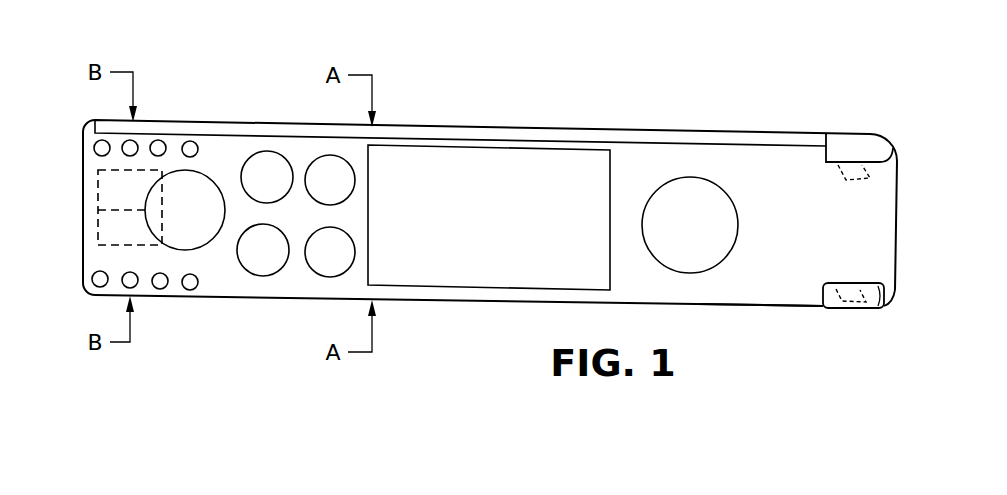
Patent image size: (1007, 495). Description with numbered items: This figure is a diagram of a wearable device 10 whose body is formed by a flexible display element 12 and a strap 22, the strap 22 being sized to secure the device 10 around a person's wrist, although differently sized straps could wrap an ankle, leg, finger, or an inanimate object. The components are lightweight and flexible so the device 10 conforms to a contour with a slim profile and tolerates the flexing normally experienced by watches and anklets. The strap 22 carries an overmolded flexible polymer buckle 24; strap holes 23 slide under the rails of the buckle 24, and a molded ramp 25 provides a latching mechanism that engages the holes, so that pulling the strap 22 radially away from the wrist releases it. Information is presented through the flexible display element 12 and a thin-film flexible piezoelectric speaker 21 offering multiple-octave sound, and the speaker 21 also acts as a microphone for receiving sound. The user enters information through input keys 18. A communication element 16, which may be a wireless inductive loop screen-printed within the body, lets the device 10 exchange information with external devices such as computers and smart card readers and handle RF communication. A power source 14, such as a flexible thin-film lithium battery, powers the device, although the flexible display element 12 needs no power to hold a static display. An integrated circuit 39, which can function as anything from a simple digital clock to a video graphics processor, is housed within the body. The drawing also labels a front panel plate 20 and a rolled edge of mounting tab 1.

The rolled edge of mounting tab 1 is at (846, 307).
The wearable device 10 is at (462, 185).
The flexible display element 12 is at (462, 272).
The power source 14 is at (182, 170).
The communication element 16 is at (142, 238).
The input keys 18 is at (250, 152).
The front panel plate 20 is at (276, 127).
The thin-film flexible piezoelectric speaker 21 is at (672, 193).
The strap 22 is at (753, 292).
The strap holes 23 is at (90, 143).
The buckle 24 is at (845, 135).
The molded ramp 25 is at (840, 170).
The integrated circuit 39 is at (105, 190).